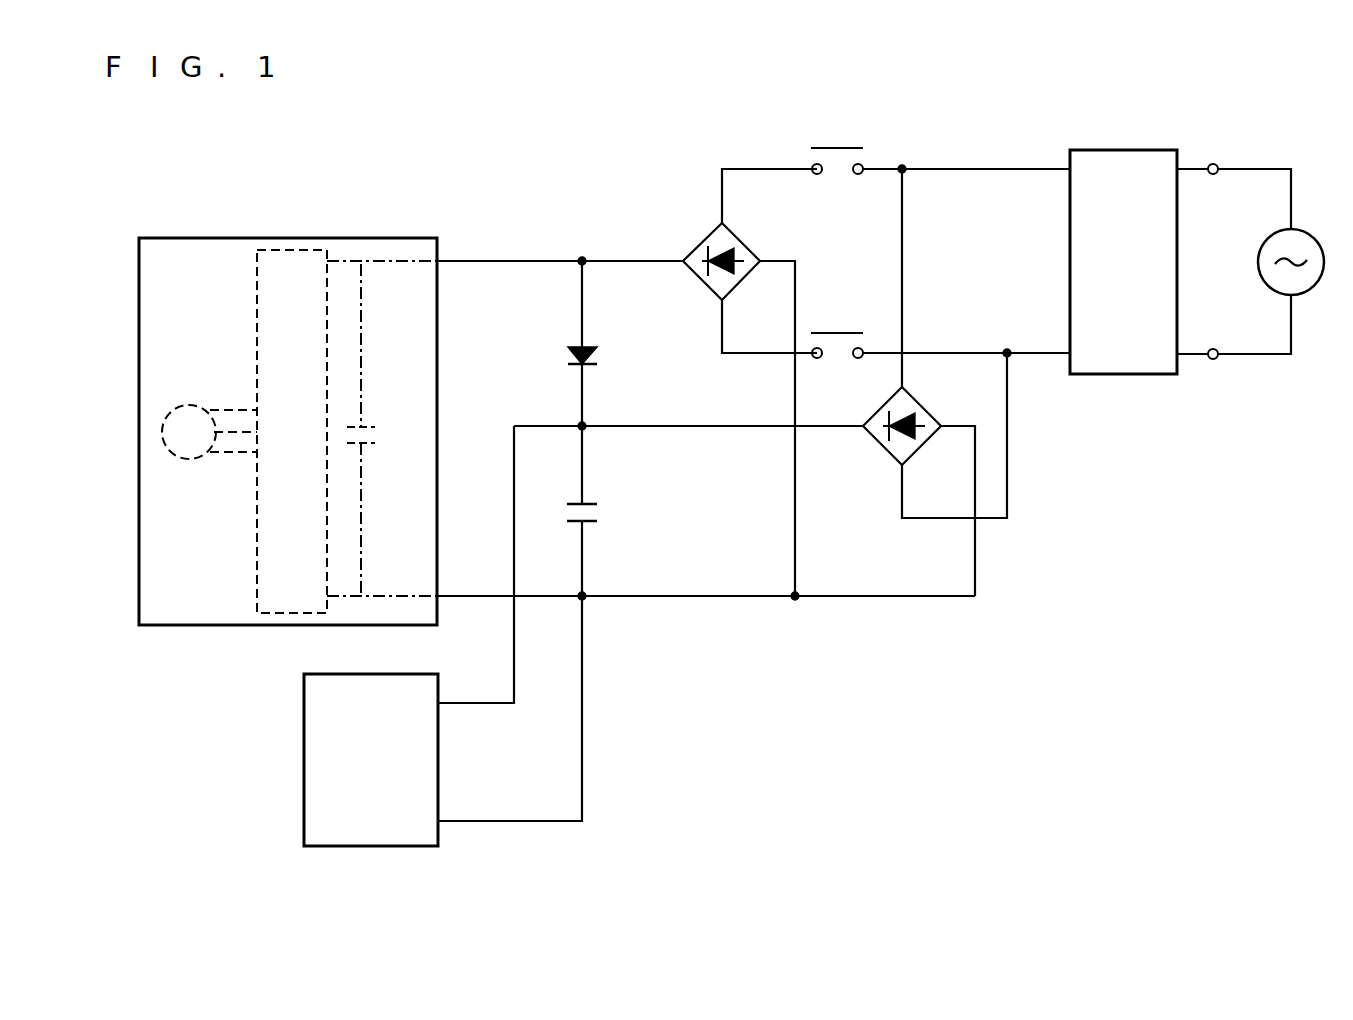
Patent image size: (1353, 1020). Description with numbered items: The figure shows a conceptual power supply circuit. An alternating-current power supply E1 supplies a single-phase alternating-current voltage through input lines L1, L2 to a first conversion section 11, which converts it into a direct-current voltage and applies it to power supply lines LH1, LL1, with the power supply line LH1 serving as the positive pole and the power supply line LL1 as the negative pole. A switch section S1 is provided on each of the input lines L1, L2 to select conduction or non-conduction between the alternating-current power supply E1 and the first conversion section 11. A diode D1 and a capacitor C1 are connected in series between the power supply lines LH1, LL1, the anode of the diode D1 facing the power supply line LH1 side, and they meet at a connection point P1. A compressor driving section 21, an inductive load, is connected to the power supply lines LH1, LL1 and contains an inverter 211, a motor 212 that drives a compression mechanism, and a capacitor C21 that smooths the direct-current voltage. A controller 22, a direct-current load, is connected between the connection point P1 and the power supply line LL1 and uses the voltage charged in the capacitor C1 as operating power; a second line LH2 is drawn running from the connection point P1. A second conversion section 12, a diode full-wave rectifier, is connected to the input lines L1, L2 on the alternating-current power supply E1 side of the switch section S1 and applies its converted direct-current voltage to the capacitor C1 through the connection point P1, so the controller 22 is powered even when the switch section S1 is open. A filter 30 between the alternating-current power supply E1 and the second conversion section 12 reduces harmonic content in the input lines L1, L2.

The compressor driving section 21 is at (405, 238).
The inverter 211 is at (292, 249).
The motor 212 is at (192, 405).
The capacitor C21 is at (375, 426).
The power supply line LH1 is at (620, 260).
The second high-potential line LH2 is at (676, 425).
The power supply line LL1 is at (690, 595).
The diode D1 is at (600, 360).
The capacitor C1 is at (602, 515).
The connection point P1 is at (572, 432).
The first conversion section 11 is at (738, 240).
The second conversion section 12 is at (918, 405).
The switch section S1 is at (848, 147).
The input line L1 is at (1035, 168).
The input line L2 is at (1043, 355).
The controller 22 is at (410, 673).
The filter 30 is at (1148, 149).
The alternating-current power supply E1 is at (1310, 232).